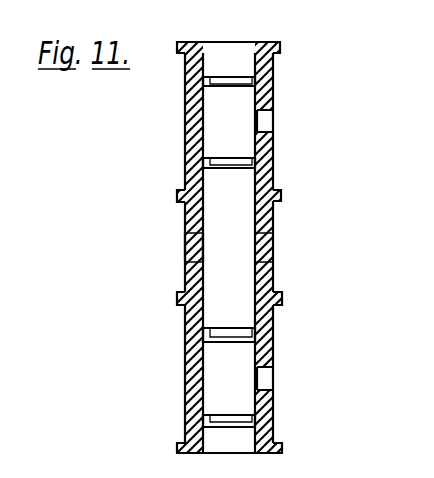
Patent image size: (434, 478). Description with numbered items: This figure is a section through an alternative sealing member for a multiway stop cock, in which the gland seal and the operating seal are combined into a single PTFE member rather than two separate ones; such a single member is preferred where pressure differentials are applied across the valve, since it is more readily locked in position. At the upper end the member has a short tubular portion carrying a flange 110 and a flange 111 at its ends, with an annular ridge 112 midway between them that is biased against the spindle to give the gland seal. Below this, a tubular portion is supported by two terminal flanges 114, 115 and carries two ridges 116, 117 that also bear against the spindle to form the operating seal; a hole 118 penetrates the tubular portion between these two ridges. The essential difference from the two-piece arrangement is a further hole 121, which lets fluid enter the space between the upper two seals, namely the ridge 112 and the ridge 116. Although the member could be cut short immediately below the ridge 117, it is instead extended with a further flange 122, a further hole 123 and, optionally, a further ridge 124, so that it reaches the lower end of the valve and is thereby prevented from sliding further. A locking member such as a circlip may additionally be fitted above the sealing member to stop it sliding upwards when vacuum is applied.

The flange 110 is at (183, 44).
The flange 111 is at (281, 196).
The annular ridge 112 is at (205, 80).
The terminal flange 114 is at (290, 193).
The terminal flange 115 is at (282, 299).
The ridge 116 is at (207, 163).
The ridge 117 is at (272, 340).
The hole 118 is at (197, 248).
The further hole 121 is at (265, 121).
The further flange 122 is at (181, 450).
The further hole 123 is at (268, 387).
The further ridge 124 is at (205, 420).